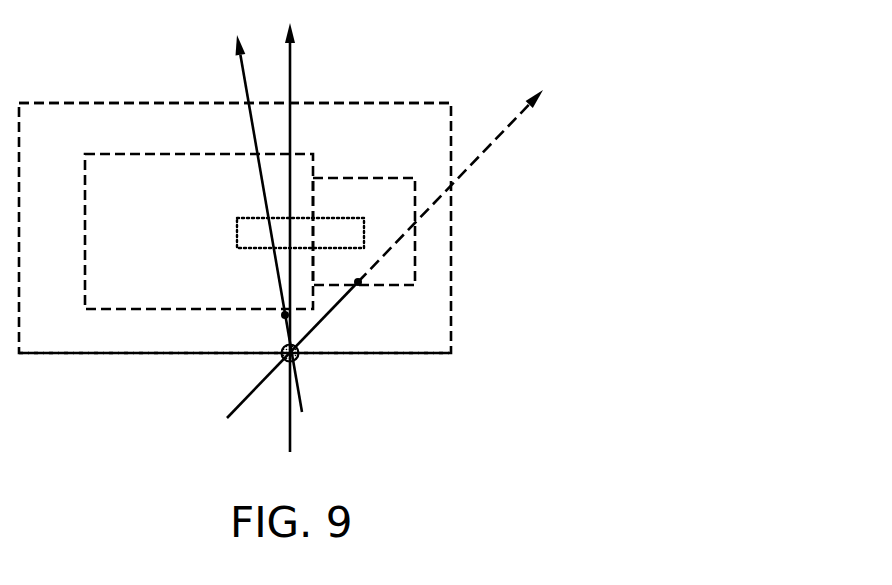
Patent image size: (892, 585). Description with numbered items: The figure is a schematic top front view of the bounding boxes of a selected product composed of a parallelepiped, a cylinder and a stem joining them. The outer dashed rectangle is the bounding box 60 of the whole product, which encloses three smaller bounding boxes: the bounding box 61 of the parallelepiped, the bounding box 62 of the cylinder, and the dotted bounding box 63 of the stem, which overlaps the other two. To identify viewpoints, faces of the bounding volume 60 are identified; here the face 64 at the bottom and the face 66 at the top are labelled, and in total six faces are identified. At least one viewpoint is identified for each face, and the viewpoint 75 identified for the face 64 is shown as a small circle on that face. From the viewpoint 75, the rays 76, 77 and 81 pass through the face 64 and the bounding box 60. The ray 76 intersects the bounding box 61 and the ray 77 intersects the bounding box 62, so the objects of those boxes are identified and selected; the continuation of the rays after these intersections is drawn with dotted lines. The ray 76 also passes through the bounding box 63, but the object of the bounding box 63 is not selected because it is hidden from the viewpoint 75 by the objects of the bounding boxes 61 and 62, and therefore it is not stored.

The bounding box 60 is at (451, 115).
The bounding box 61 is at (121, 311).
The bounding box 62 is at (415, 232).
The bounding box 63 is at (348, 228).
The face 64 is at (438, 355).
The face 66 is at (62, 130).
The viewpoint 75 is at (282, 358).
The ray 76 is at (303, 403).
The ray 77 is at (230, 418).
The ray 81 is at (292, 445).